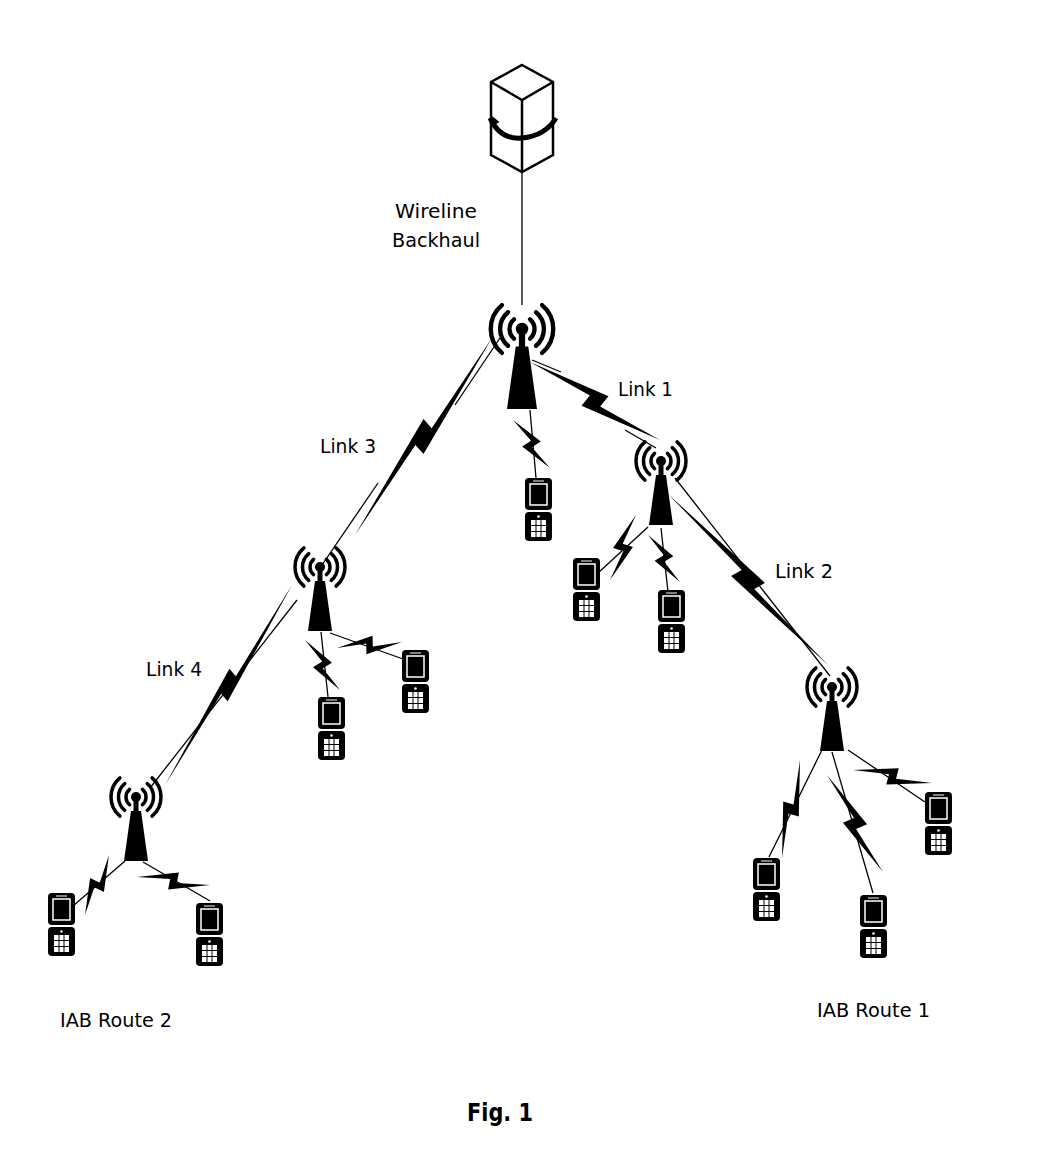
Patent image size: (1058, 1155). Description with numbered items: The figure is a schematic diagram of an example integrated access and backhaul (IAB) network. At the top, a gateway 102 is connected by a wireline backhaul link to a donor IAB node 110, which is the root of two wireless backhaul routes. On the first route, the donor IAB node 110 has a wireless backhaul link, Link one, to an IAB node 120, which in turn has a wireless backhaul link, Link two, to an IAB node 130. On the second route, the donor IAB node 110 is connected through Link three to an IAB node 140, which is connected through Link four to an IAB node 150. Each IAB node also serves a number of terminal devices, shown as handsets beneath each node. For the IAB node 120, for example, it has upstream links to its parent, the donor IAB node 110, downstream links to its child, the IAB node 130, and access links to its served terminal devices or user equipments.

The gateway 102 is at (558, 70).
The donor IAB node 110 is at (535, 300).
The IAB node 120 is at (680, 436).
The IAB node 130 is at (845, 655).
The IAB node 140 is at (370, 548).
The IAB node 150 is at (185, 781).